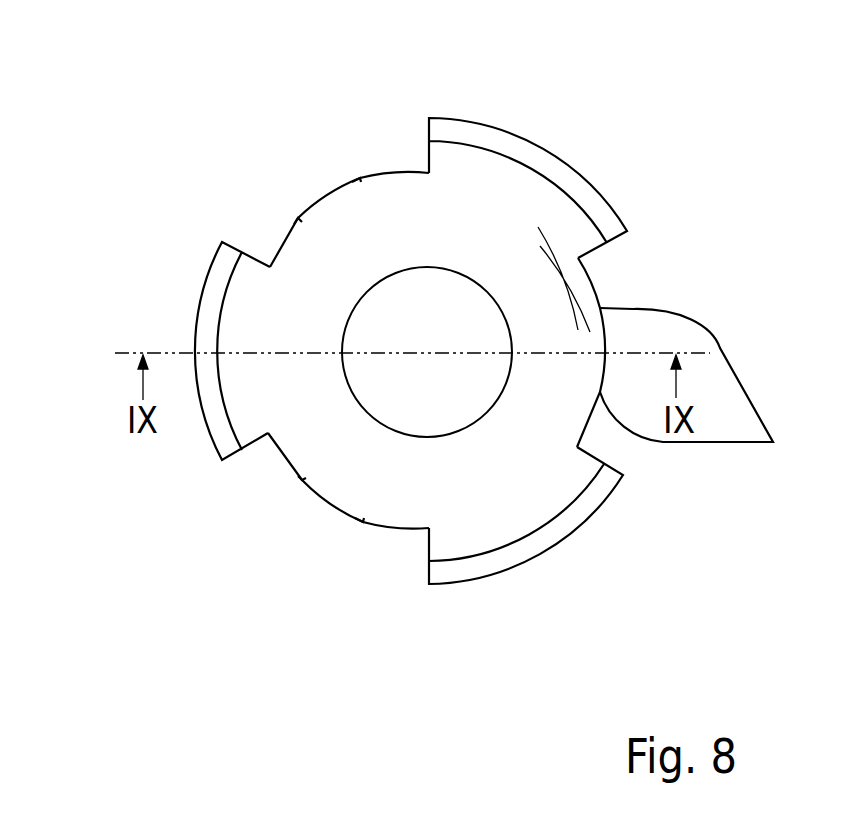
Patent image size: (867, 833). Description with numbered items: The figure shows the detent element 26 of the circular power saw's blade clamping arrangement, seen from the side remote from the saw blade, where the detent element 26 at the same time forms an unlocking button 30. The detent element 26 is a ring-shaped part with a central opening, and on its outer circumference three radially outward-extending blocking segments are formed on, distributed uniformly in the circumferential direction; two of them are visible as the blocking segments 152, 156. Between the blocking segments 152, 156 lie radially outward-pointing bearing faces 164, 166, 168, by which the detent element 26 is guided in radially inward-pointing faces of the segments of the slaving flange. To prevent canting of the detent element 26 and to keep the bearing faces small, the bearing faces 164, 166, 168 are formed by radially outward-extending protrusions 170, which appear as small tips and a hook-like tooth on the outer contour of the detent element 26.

The detent element 26 is at (629, 122).
The unlocking button 30 is at (216, 500).
The blocking segment 152 is at (455, 602).
The blocking segment 156 is at (502, 107).
The bearing face 164 is at (356, 566).
The bearing face 166 is at (648, 294).
The bearing face 168 is at (355, 143).
The protrusion 170 is at (360, 178).